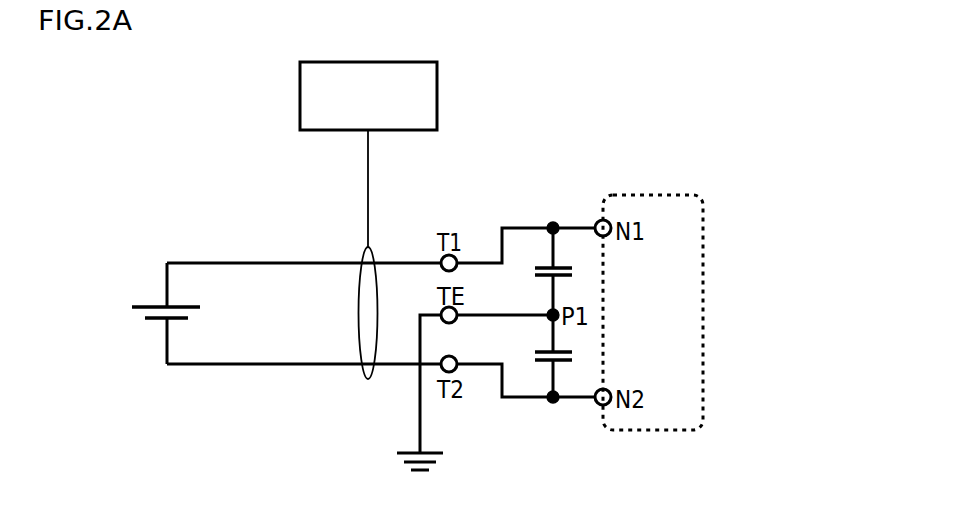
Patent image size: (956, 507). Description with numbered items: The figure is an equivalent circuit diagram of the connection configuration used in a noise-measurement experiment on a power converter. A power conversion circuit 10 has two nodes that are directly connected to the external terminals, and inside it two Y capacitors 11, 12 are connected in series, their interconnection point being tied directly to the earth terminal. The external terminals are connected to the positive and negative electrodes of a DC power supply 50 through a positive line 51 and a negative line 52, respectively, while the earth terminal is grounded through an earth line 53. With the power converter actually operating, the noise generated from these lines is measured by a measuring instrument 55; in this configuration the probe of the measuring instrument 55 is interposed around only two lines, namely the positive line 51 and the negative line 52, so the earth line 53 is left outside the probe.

The power conversion circuit 10 is at (703, 298).
The Y capacitor 11 is at (572, 265).
The Y capacitor 12 is at (572, 360).
The DC power supply 50 is at (157, 305).
The positive line 51 is at (228, 263).
The negative line 52 is at (235, 364).
The earth line 53 is at (420, 413).
The measuring instrument 55 is at (438, 88).